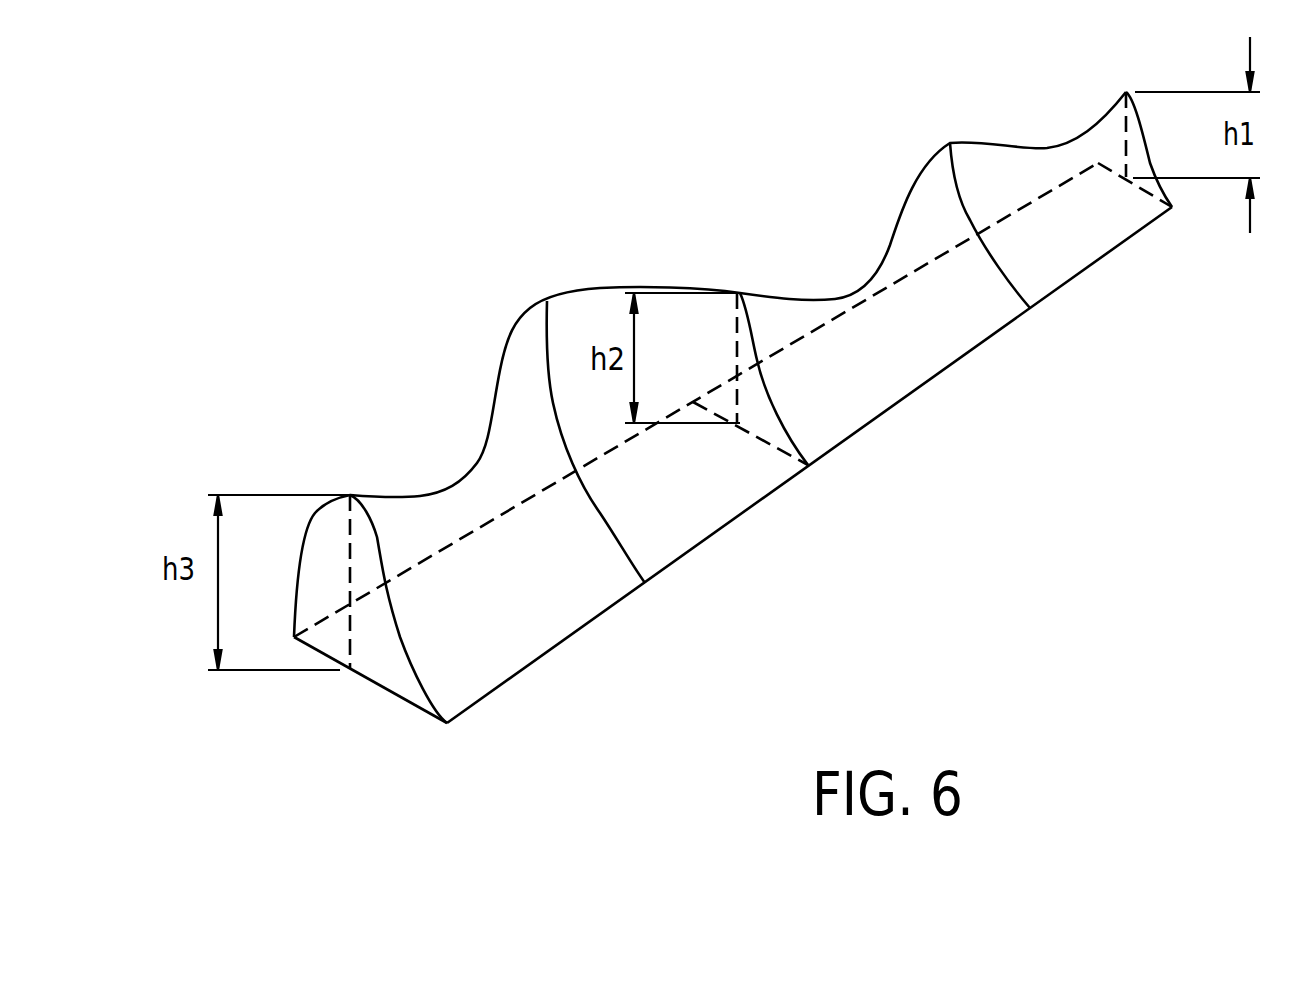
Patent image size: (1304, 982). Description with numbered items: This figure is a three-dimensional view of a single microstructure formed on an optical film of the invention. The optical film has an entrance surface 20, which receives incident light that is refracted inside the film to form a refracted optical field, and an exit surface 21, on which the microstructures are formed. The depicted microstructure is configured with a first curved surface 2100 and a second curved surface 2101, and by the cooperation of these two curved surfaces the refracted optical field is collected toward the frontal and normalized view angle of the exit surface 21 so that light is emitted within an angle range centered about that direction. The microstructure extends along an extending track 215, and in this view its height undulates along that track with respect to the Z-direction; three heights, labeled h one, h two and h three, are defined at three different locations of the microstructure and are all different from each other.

The entrance surface 20 is at (383, 663).
The exit surface 21 is at (403, 313).
The extending track 215 is at (577, 293).
The first curved surface 2100 is at (306, 525).
The second curved surface 2101 is at (537, 623).